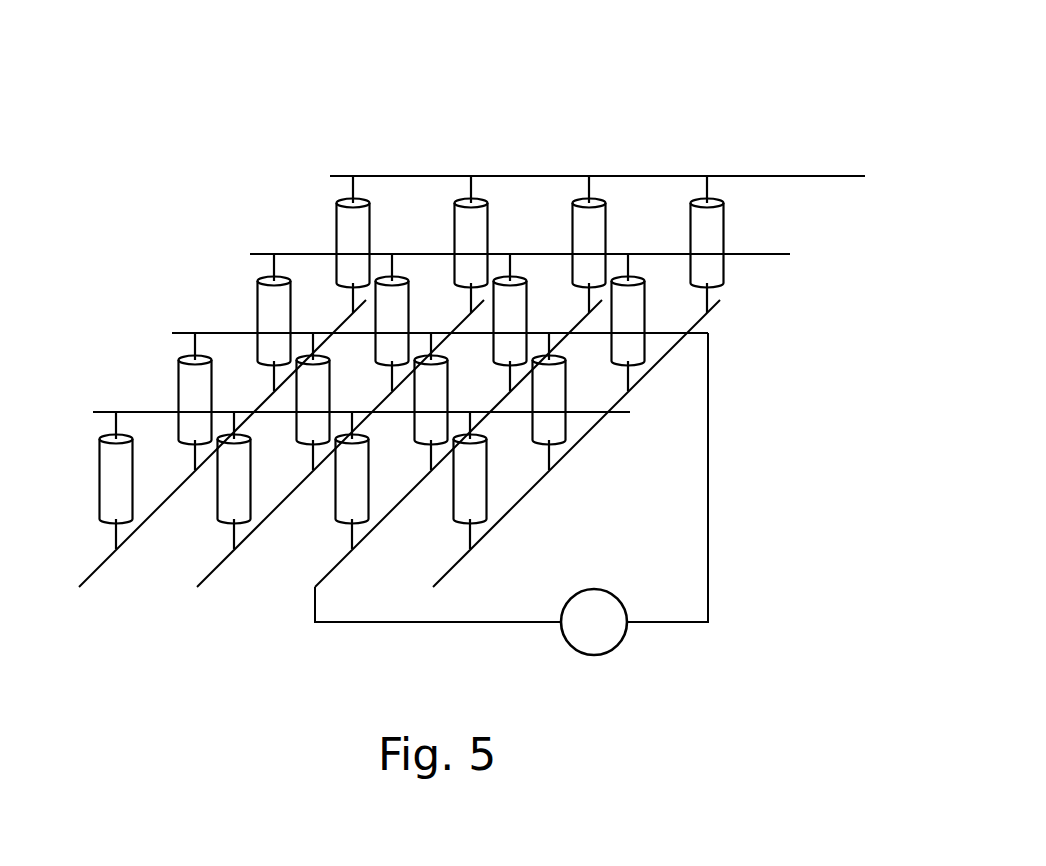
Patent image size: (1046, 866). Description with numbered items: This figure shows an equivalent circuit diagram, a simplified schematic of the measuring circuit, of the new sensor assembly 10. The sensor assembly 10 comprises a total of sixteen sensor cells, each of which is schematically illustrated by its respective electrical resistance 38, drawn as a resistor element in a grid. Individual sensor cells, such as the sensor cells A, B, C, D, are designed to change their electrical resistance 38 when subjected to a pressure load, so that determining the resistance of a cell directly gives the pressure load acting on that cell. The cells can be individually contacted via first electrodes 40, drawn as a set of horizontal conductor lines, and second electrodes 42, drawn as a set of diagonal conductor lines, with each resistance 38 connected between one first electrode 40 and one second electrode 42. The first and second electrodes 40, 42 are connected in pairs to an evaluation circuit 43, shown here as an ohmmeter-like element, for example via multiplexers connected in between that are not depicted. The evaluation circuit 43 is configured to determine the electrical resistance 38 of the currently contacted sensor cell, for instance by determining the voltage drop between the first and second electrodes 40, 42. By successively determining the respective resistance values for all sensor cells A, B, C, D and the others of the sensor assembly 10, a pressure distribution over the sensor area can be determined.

The sensor assembly 10 is at (520, 118).
The electrical resistance 38 is at (107, 481).
The first electrodes 40 is at (335, 176).
The second electrodes 42 is at (88, 592).
The evaluation circuit 43 is at (594, 656).
The sensor cell A is at (90, 512).
The sensor cell B is at (213, 512).
The sensor cell C is at (293, 390).
The sensor cell D is at (177, 392).